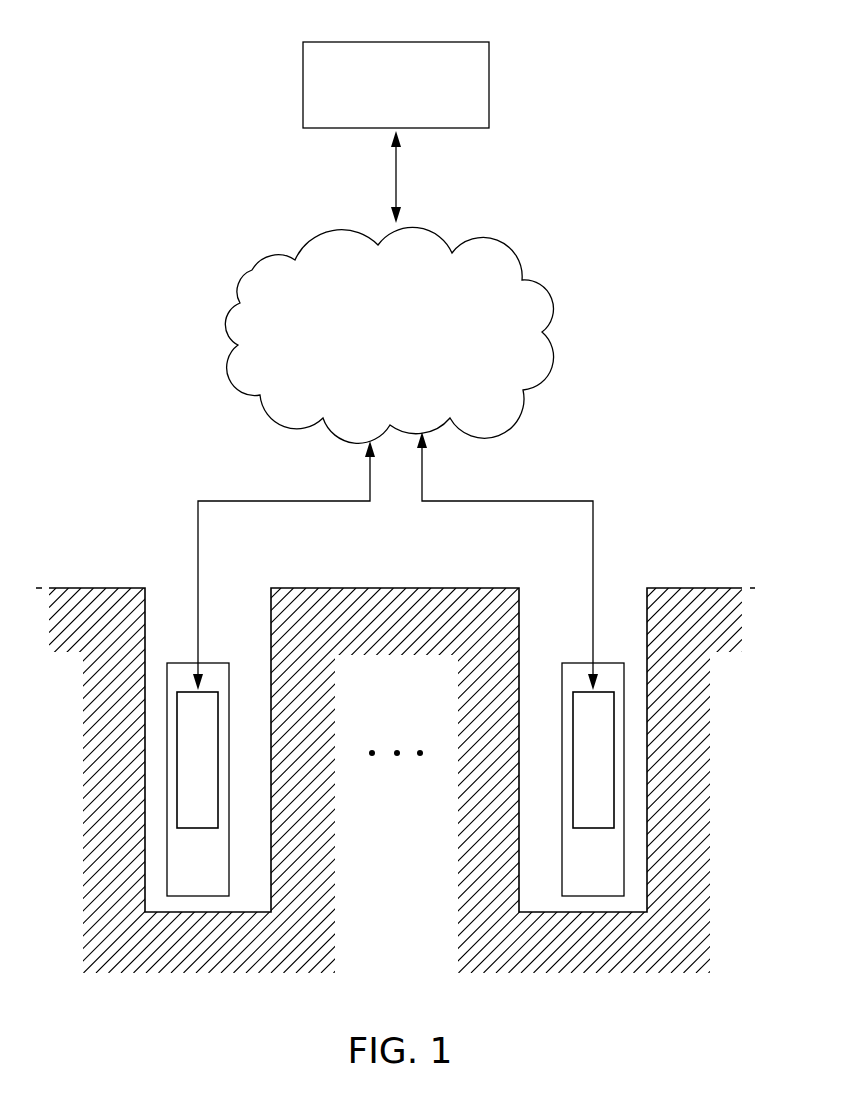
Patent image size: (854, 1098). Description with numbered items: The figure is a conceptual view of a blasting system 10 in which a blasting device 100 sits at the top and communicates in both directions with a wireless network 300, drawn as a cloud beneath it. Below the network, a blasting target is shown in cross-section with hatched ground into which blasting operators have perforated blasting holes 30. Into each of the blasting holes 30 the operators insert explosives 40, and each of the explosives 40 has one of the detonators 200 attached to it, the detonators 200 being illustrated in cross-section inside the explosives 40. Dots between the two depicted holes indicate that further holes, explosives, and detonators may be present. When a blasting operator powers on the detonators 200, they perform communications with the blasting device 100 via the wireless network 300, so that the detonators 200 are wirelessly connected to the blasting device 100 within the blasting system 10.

The blasting system 10 is at (653, 101).
The blasting device 100 is at (303, 71).
The wireless network 300 is at (250, 272).
The blasting holes 30 is at (270, 602).
The explosives 40 is at (229, 832).
The detonators 200 is at (202, 829).